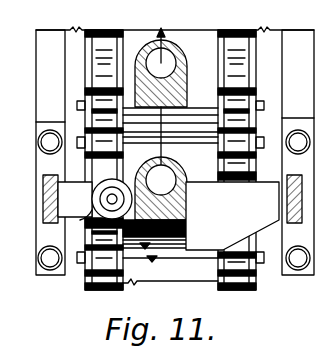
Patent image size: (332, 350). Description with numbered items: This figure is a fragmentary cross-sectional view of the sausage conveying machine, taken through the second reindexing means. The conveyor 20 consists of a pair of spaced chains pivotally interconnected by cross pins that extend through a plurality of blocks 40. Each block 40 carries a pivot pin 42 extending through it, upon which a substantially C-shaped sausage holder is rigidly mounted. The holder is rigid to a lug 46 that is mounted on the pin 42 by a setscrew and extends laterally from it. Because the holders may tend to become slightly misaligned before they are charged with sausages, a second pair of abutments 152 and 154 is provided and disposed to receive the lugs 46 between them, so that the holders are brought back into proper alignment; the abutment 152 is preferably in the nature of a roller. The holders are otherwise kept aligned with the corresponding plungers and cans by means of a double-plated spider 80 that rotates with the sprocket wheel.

The conveyor 20 is at (80, 81).
The double-plated spider 80 is at (111, 31).
The pivot pin 42 is at (152, 62).
The block 40 is at (207, 165).
The lug 46 is at (186, 209).
The abutment 152 is at (75, 211).
The abutment 154 is at (203, 243).